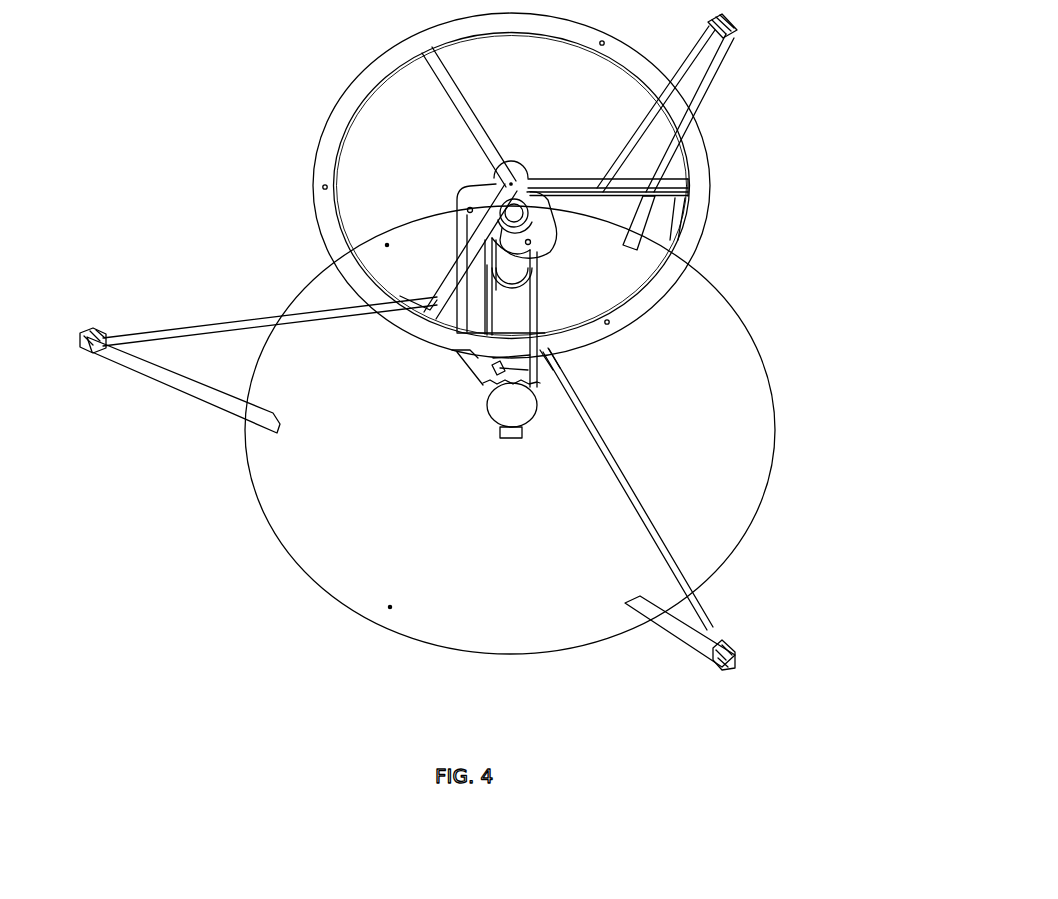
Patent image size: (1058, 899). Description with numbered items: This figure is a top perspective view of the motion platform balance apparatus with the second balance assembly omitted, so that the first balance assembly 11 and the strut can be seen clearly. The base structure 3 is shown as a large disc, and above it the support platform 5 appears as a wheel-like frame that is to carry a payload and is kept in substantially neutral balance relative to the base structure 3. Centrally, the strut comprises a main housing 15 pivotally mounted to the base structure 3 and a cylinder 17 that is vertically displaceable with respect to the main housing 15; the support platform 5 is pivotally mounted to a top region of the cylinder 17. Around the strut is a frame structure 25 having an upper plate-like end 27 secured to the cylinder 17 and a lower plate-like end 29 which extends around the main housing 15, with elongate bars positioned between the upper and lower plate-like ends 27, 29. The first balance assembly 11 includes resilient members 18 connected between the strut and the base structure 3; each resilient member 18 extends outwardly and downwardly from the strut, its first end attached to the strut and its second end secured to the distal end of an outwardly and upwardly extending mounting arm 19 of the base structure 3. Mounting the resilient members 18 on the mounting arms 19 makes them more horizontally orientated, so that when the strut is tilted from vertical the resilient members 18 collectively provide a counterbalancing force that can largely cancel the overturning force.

The first balance assembly 11 is at (439, 359).
The base structure 3 is at (720, 477).
The support platform 5 is at (687, 127).
The main housing 15 is at (520, 316).
The cylinder 17 is at (543, 267).
The resilient members 18 is at (283, 336).
The mounting arms 19 is at (150, 378).
The frame structure 25 is at (545, 282).
The upper plate-like end 27 is at (468, 203).
The lower plate-like end 29 is at (540, 383).